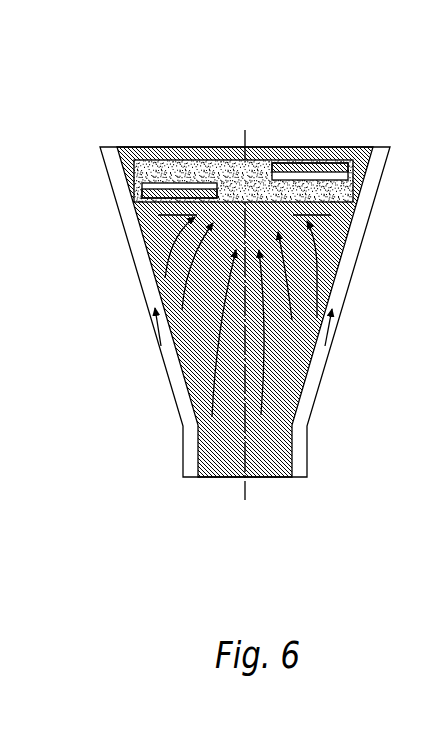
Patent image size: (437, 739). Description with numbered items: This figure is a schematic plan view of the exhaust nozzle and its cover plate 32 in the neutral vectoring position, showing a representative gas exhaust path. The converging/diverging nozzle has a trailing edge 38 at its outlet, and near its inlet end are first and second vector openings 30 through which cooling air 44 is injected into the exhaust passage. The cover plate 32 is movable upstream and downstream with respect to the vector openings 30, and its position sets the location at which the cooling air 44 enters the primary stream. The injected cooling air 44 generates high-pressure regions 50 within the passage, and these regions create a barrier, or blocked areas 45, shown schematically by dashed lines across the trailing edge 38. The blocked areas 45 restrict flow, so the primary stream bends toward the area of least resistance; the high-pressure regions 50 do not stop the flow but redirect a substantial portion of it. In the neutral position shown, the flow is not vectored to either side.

The vector openings 30 is at (156, 182).
The cover plate 32 is at (238, 160).
The trailing edge 38 is at (357, 147).
The cooling air 44 is at (156, 325).
The blocked areas 45 is at (176, 221).
The high-pressure regions 50 is at (206, 337).